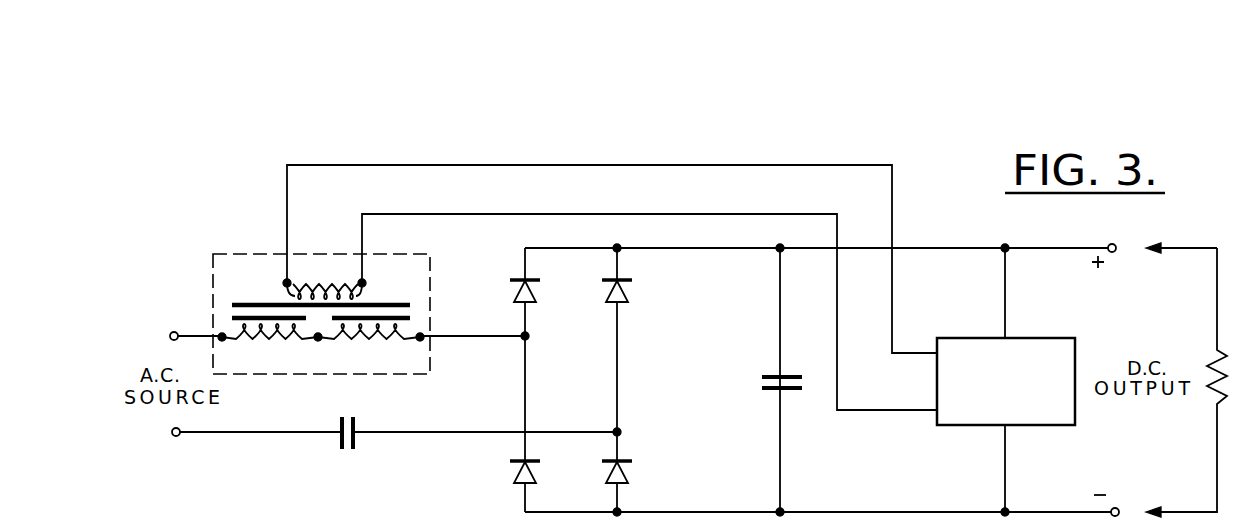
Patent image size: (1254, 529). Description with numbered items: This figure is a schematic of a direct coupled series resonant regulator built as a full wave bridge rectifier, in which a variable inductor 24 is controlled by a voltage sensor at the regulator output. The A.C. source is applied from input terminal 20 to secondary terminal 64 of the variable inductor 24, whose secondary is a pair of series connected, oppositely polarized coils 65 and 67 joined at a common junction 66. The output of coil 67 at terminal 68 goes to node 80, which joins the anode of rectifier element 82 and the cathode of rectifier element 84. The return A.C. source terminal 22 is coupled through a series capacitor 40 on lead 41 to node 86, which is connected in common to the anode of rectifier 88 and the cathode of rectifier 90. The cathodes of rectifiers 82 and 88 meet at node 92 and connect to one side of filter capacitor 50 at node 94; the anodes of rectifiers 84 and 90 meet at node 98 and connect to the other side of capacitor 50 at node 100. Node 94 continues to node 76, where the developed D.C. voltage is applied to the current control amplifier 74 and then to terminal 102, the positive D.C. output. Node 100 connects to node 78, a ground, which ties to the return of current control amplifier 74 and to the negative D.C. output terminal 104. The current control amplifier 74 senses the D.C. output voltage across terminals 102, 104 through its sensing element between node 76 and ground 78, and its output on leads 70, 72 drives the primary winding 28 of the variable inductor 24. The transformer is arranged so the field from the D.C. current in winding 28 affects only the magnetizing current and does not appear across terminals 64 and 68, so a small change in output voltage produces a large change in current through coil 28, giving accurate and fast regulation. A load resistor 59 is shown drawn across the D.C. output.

The input terminal 20 is at (172, 333).
The return A.C. source terminal 22 is at (176, 437).
The variable inductor 24 is at (432, 258).
The winding 28 is at (285, 282).
The series capacitor 40 is at (348, 451).
The lead 41 is at (480, 431).
The filter capacitor 50 is at (762, 381).
The load resistor 59 is at (1212, 352).
The secondary terminal 64 is at (222, 337).
The coil 65 is at (272, 343).
The common junction 66 is at (318, 339).
The coil 67 is at (392, 343).
The terminal 68 is at (422, 336).
The lead 70 is at (362, 226).
The lead 72 is at (287, 196).
The current control amplifier 74 is at (968, 338).
The node 76 is at (1007, 251).
The ground 78 is at (1007, 509).
The node 80 is at (527, 338).
The rectifier element 82 is at (538, 295).
The rectifier element 84 is at (512, 480).
The node 86 is at (619, 431).
The rectifier 88 is at (630, 295).
The rectifier 90 is at (630, 480).
The node 92 is at (620, 250).
The node 94 is at (779, 250).
The node 98 is at (615, 510).
The node 100 is at (782, 510).
The terminal 102 is at (1115, 251).
The terminal 104 is at (1118, 508).